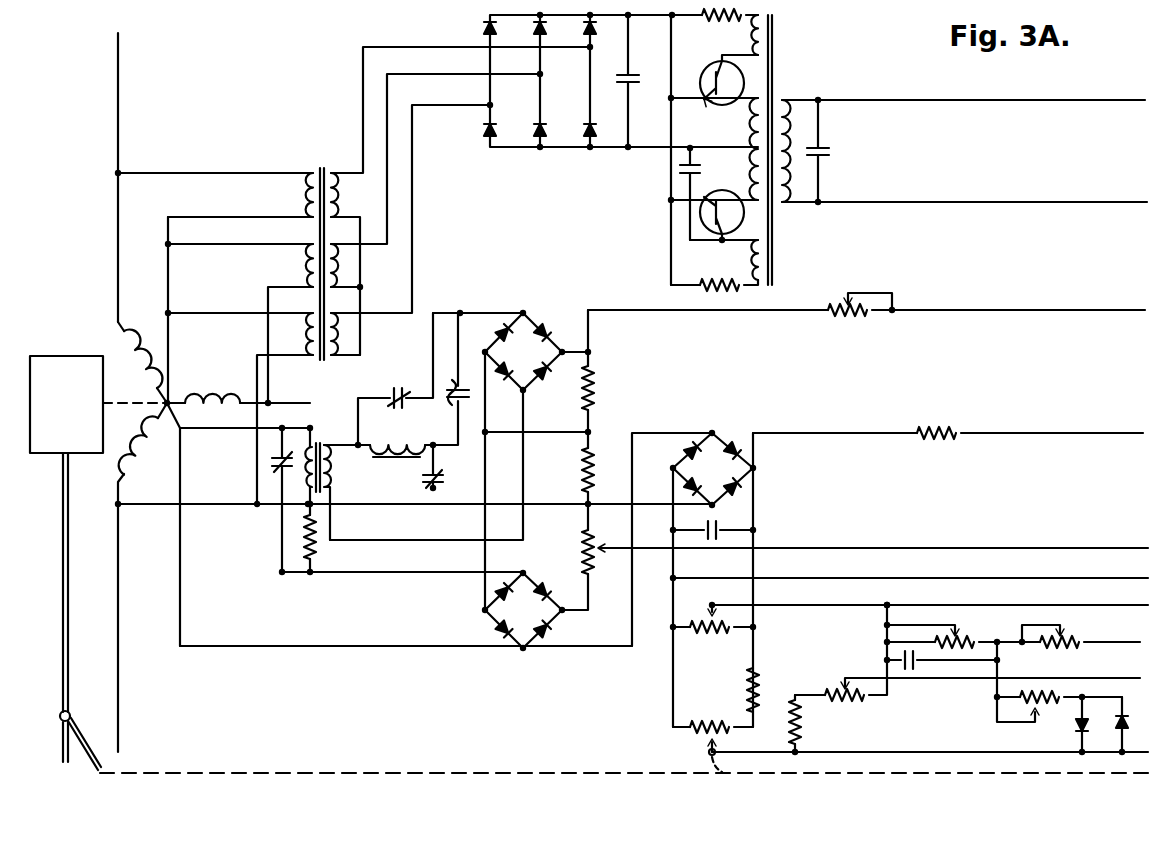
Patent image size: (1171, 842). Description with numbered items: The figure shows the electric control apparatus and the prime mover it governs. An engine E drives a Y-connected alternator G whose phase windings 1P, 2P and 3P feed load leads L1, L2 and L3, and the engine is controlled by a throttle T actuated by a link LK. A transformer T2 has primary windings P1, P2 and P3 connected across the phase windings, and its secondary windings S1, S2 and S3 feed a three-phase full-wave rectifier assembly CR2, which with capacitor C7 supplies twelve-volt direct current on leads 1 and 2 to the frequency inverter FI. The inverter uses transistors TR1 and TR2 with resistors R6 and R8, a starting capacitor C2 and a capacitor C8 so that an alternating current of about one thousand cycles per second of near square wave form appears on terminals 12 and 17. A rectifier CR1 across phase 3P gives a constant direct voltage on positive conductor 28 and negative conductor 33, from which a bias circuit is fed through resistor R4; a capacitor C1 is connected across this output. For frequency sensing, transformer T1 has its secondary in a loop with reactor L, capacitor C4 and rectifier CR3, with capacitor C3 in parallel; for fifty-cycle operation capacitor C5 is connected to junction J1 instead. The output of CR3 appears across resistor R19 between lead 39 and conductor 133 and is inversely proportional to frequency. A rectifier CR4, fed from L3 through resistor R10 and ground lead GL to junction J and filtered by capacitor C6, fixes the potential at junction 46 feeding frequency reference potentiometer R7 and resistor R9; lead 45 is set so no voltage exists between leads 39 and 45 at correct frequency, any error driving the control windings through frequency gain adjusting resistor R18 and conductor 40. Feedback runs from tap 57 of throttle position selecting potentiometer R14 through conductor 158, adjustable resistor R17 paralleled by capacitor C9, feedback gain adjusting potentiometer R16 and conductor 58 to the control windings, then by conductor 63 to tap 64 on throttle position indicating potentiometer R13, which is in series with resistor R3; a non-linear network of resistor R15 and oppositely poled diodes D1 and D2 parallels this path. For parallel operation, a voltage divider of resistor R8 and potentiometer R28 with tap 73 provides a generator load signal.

The load lead L1 is at (120, 143).
The load lead L2 is at (302, 403).
The load lead L3 is at (120, 588).
The phase winding 1P is at (135, 367).
The phase winding 2P is at (210, 392).
The phase winding 3P is at (136, 462).
The alternator G is at (192, 388).
The junction J is at (182, 414).
The engine E is at (72, 411).
The throttle T is at (80, 731).
The link LK is at (382, 772).
The ground lead GL is at (342, 646).
The transformer T2 is at (338, 163).
The primary winding P1 is at (306, 193).
The primary winding P2 is at (306, 264).
The primary winding P3 is at (306, 333).
The secondary winding S1 is at (340, 193).
The secondary winding S2 is at (340, 266).
The secondary winding S3 is at (340, 334).
The three-phase full-wave rectifier assembly CR2 is at (582, 92).
The capacitor C7 is at (636, 80).
The lead 1 is at (652, 20).
The lead 2 is at (606, 150).
The frequency inverter FI is at (698, 55).
The resistor R6 is at (730, 22).
The transistor TR1 is at (708, 102).
The transistor TR2 is at (708, 182).
The starting capacitor C2 is at (678, 176).
The resistor R8 is at (722, 280).
The capacitor C8 is at (830, 157).
The terminal 12 is at (965, 101).
The terminal 17 is at (958, 202).
The conductor 40 is at (1120, 310).
The frequency gain adjusting resistor R18 is at (868, 315).
The lead 39 is at (590, 330).
The resistor R19 is at (596, 392).
The resistor R9 is at (582, 470).
The frequency reference potentiometer R7 is at (580, 558).
The lead 45 is at (606, 548).
The conductor 133 is at (530, 432).
The resistor R4 is at (936, 430).
The rectifier CR1 is at (730, 476).
The negative conductor 33 is at (670, 472).
The positive conductor 28 is at (755, 480).
The capacitor C1 is at (716, 528).
The tap 57 is at (712, 604).
The conductor 158 is at (846, 606).
The throttle position selecting potentiometer R14 is at (728, 634).
The resistor R3 is at (750, 690).
The throttle position indicating potentiometer R13 is at (694, 730).
The tap 64 is at (720, 742).
The conductor 63 is at (1028, 752).
The potentiometer R28 is at (852, 700).
The tap 73 is at (844, 678).
The adjustable resistor R17 is at (960, 636).
The capacitor C9 is at (918, 664).
The feedback gain adjusting potentiometer R16 is at (1068, 638).
The conductor 58 is at (1128, 644).
The adjustable resistor R15 is at (1048, 694).
The diode D2 is at (1078, 729).
The diode D1 is at (1118, 720).
The junction J1 is at (466, 311).
The full-wave rectifier CR3 is at (542, 360).
The capacitor C3 is at (400, 388).
The capacitor C4 is at (444, 379).
The reactor L is at (392, 458).
The capacitor C5 is at (422, 482).
The transformer T1 is at (350, 441).
The filter capacitor C6 is at (270, 462).
The resistor R10 is at (314, 548).
The full-wave rectifier CR4 is at (542, 617).
The junction 46 is at (566, 614).